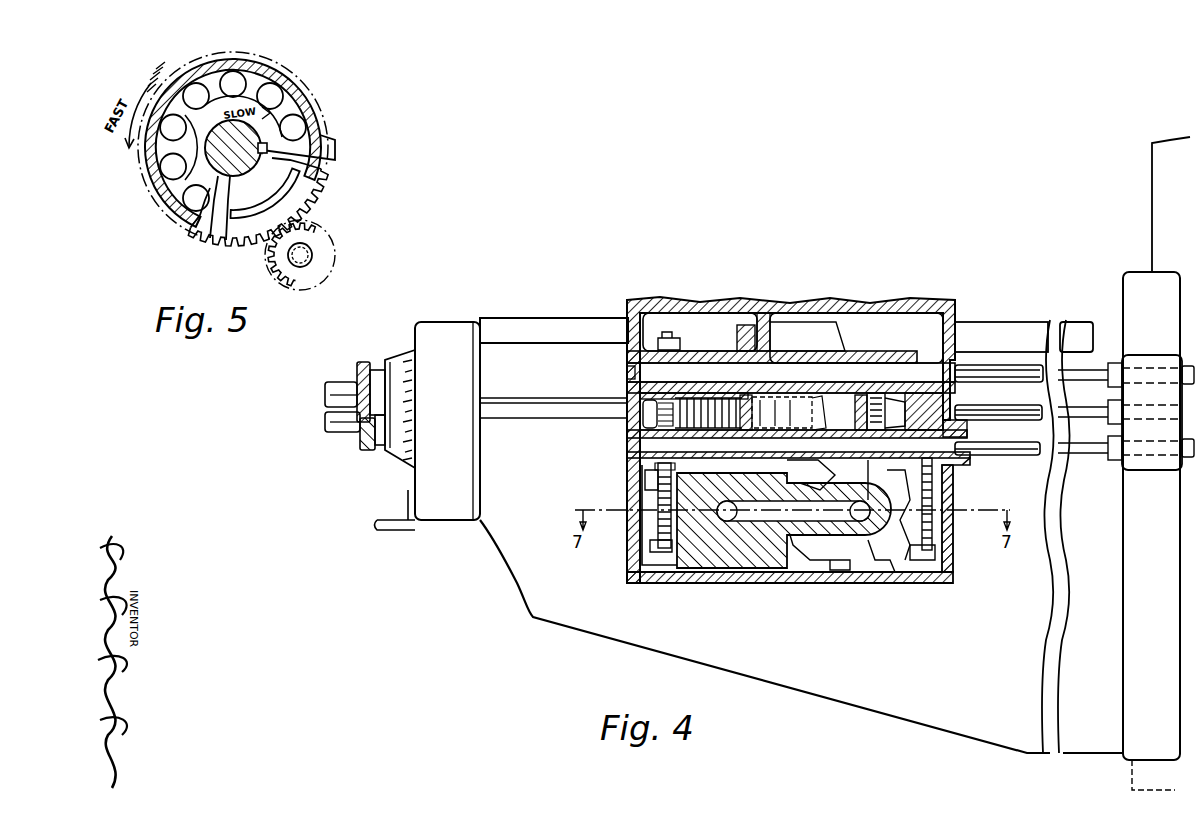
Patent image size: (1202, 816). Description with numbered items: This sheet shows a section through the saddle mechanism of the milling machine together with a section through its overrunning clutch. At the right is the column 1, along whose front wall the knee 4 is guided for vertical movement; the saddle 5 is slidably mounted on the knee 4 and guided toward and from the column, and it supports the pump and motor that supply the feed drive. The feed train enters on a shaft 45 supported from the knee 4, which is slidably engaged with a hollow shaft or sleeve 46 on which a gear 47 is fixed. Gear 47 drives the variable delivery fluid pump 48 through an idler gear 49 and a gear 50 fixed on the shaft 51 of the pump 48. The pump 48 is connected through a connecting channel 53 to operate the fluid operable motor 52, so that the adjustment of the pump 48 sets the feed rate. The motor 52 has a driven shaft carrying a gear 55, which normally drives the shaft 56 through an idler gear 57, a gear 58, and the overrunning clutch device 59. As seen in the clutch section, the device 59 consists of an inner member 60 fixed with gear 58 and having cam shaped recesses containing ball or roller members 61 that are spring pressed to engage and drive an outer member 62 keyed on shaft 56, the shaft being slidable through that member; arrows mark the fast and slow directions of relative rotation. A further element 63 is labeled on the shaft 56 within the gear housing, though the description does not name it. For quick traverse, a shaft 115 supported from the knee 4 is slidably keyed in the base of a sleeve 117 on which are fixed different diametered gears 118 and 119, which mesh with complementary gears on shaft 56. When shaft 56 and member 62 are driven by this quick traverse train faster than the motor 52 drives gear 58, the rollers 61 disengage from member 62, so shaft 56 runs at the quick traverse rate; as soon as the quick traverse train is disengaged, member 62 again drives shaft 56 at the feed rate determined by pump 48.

In FIG. 4, the column 1 is at (1165, 228).
In FIG. 4, the knee 4 is at (518, 584).
In FIG. 4, the saddle 5 is at (956, 300).
In FIG. 4, the shaft 45 is at (1084, 455).
In FIG. 4, the hollow shaft or sleeve 46 is at (967, 455).
In FIG. 4, the gear 47 is at (645, 462).
In FIG. 4, the fluid pump 48 is at (700, 556).
In FIG. 4, the idler gear 49 is at (658, 486).
In FIG. 4, the gear 50 is at (650, 546).
In FIG. 4, the shaft of pump 51 is at (640, 488).
In FIG. 4, the fluid operable motor 52 is at (900, 572).
In FIG. 4, the connecting channel 53 is at (795, 525).
In FIG. 4, the gear 55 is at (953, 555).
In FIG. 5, the shaft 56 is at (236, 148).
In FIG. 4, the shaft 56 is at (1002, 405).
In FIG. 5, the idler gear 57 is at (312, 222).
In FIG. 4, the idler gear 57 is at (922, 470).
In FIG. 4, the gear 58 is at (940, 392).
In FIG. 5, the overrunning clutch device 59 is at (280, 62).
In FIG. 5, the inner member 60 is at (336, 138).
In FIG. 5, the ball or roller members 61 is at (298, 124).
In FIG. 5, the outer member 62 is at (232, 66).
In FIG. 4, the clutch 63 is at (789, 413).
In FIG. 4, the shaft 115 is at (990, 366).
In FIG. 4, the sleeve 117 is at (876, 355).
In FIG. 4, the gear 118 is at (745, 328).
In FIG. 4, the gear 119 is at (665, 338).